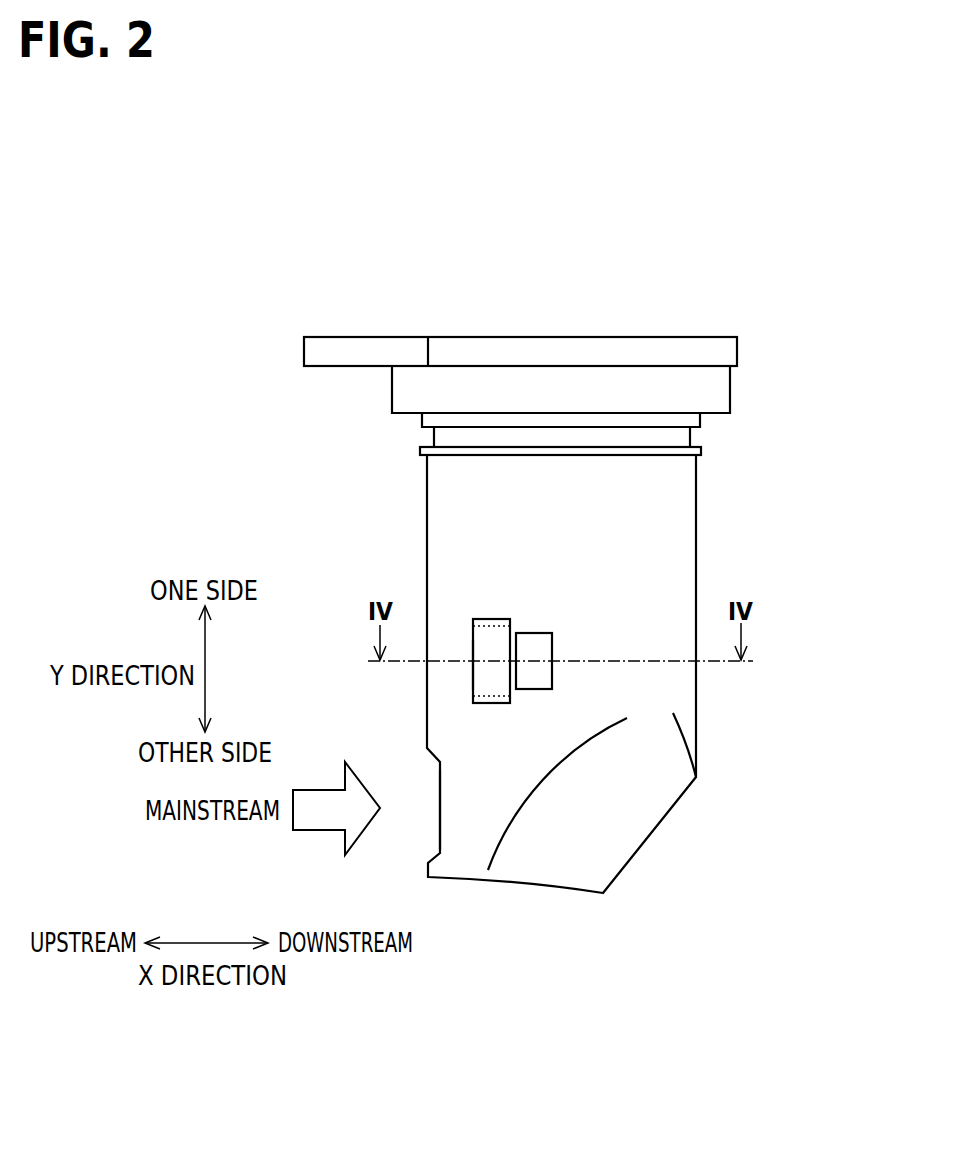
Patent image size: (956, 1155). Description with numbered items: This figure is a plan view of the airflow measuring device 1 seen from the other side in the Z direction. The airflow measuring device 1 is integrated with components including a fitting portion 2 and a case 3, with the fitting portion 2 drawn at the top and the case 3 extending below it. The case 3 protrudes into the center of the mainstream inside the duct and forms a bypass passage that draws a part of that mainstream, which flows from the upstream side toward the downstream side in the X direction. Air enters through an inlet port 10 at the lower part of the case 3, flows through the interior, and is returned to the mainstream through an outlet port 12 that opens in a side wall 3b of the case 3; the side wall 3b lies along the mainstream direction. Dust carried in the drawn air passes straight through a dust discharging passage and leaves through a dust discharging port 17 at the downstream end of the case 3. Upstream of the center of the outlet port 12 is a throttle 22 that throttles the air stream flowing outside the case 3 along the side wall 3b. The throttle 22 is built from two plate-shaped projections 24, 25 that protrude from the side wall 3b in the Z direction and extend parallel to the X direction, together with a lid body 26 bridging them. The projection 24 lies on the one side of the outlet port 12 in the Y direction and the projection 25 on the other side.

The airflow measuring device 1 is at (804, 337).
The fitting portion 2 is at (687, 440).
The case 3 is at (697, 553).
The side wall 3b is at (687, 508).
The inlet port 10 is at (440, 805).
The outlet port 12 is at (548, 675).
The dust discharging port 17 is at (650, 838).
The throttle 22 is at (473, 628).
The projection 24 is at (473, 622).
The projection 25 is at (473, 703).
The lid body 26 is at (480, 677).